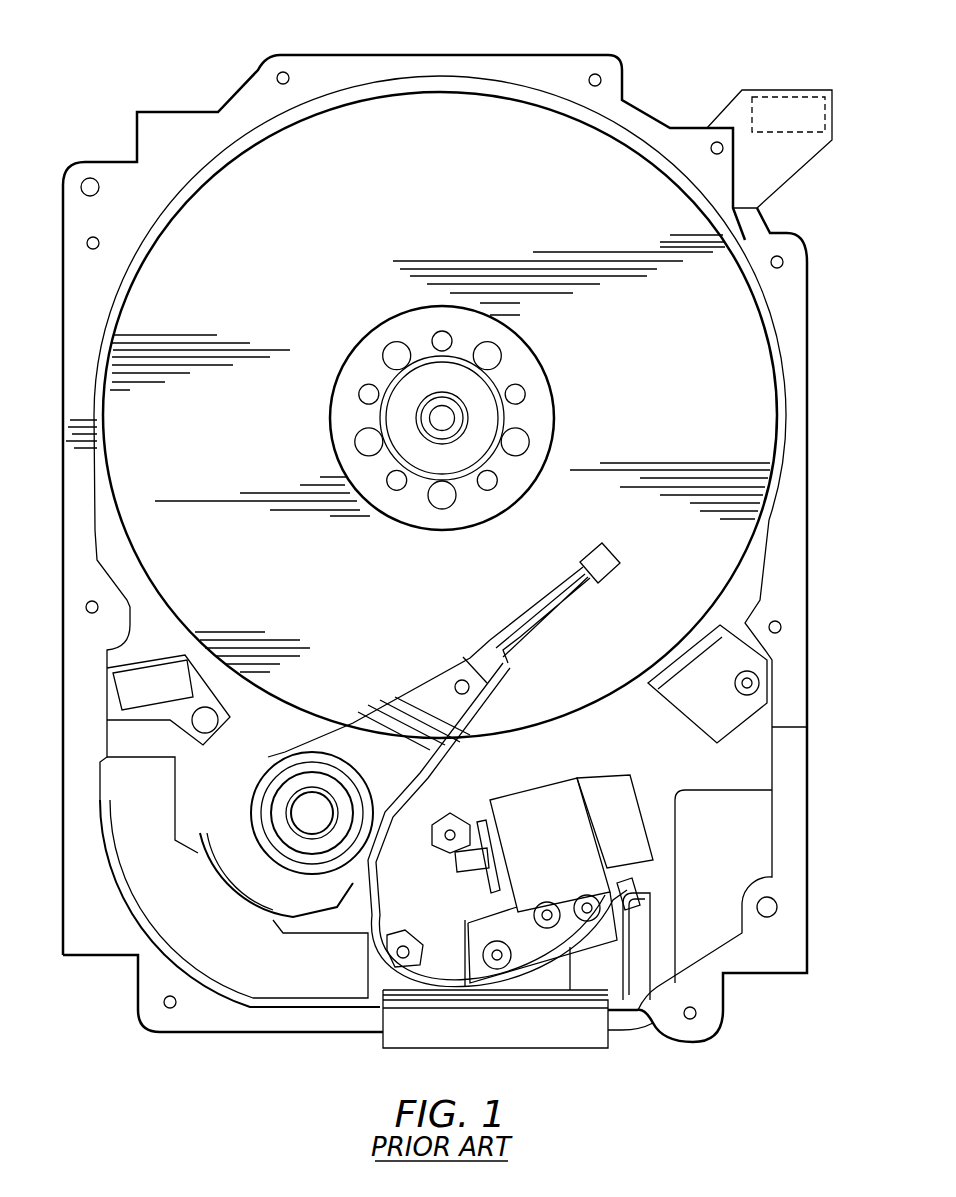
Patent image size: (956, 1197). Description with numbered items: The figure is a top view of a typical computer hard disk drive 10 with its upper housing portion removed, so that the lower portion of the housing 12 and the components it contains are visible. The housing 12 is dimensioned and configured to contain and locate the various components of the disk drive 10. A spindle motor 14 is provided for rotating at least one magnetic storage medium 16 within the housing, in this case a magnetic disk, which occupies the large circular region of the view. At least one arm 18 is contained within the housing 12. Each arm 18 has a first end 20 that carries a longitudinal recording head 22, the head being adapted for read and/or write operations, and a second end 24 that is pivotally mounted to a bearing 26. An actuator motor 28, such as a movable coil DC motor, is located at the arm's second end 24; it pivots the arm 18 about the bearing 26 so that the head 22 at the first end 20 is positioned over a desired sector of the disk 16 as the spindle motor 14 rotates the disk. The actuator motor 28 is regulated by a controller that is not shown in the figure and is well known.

The hard disk drive 10 is at (118, 100).
The housing 12 is at (576, 68).
The spindle motor 14 is at (434, 418).
The magnetic storage medium 16 is at (357, 221).
The arm 18 is at (427, 700).
The first end 20 is at (544, 594).
The longitudinal recording head 22 is at (600, 563).
The second end 24 is at (338, 755).
The bearing 26 is at (300, 806).
The actuator motor 28 is at (178, 929).